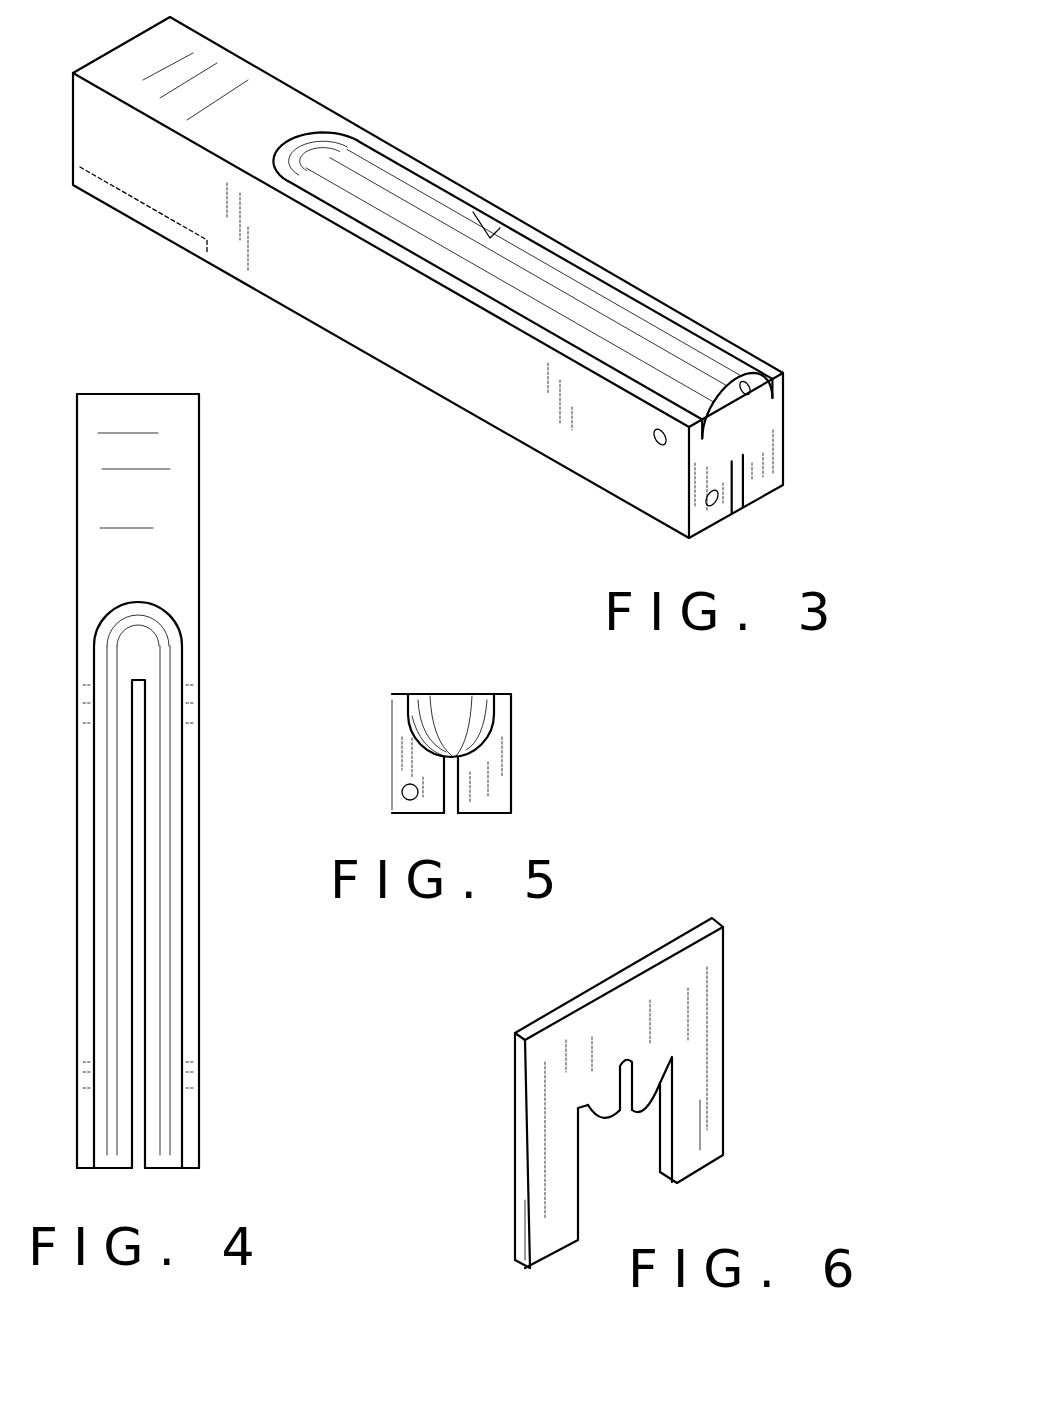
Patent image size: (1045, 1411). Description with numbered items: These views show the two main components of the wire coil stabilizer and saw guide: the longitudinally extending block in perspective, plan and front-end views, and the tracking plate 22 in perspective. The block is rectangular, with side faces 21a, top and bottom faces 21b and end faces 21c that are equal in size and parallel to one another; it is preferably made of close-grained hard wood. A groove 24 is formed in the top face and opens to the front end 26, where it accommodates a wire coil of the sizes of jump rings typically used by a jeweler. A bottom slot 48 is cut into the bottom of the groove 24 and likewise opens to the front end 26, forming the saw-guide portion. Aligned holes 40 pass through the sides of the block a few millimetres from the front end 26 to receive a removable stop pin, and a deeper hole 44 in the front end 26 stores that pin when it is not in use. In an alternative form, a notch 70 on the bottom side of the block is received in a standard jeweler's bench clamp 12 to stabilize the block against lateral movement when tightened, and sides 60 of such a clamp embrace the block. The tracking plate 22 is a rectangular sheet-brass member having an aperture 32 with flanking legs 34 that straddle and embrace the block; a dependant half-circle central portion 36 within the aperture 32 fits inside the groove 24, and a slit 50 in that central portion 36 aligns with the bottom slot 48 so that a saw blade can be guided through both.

In FIG. 3, the bench clamp 12 is at (274, 78).
In FIG. 4, the bench clamp 12 is at (199, 551).
In FIG. 5, the bench clamp 12 is at (392, 715).
In FIG. 3, the groove 24 is at (498, 238).
In FIG. 4, the groove 24 is at (180, 765).
In FIG. 5, the groove 24 is at (500, 709).
In FIG. 3, the sides 60 is at (553, 335).
In FIG. 4, the sides 60 is at (138, 885).
In FIG. 5, the sides 60 is at (503, 692).
In FIG. 3, the holes 40 is at (658, 430).
In FIG. 4, the holes 40 is at (198, 1078).
In FIG. 3, the front end 26 is at (768, 463).
In FIG. 4, the front end 26 is at (157, 1170).
In FIG. 5, the front end 26 is at (495, 783).
In FIG. 3, the bottom slot 48 is at (740, 505).
In FIG. 4, the bottom slot 48 is at (139, 900).
In FIG. 5, the bottom slot 48 is at (452, 808).
In FIG. 3, the hole 44 is at (709, 508).
In FIG. 3, the notch 70 is at (157, 217).
In FIG. 5, the side faces 21a is at (392, 772).
In FIG. 5, the top and bottom faces 21b is at (418, 815).
In FIG. 5, the end faces 21c is at (489, 761).
In FIG. 6, the tracking plate 22 is at (725, 980).
In FIG. 6, the flanking legs 34 is at (515, 1195).
In FIG. 6, the central portion 36 is at (598, 1122).
In FIG. 6, the slit 50 is at (625, 1117).
In FIG. 6, the aperture 32 is at (660, 1157).